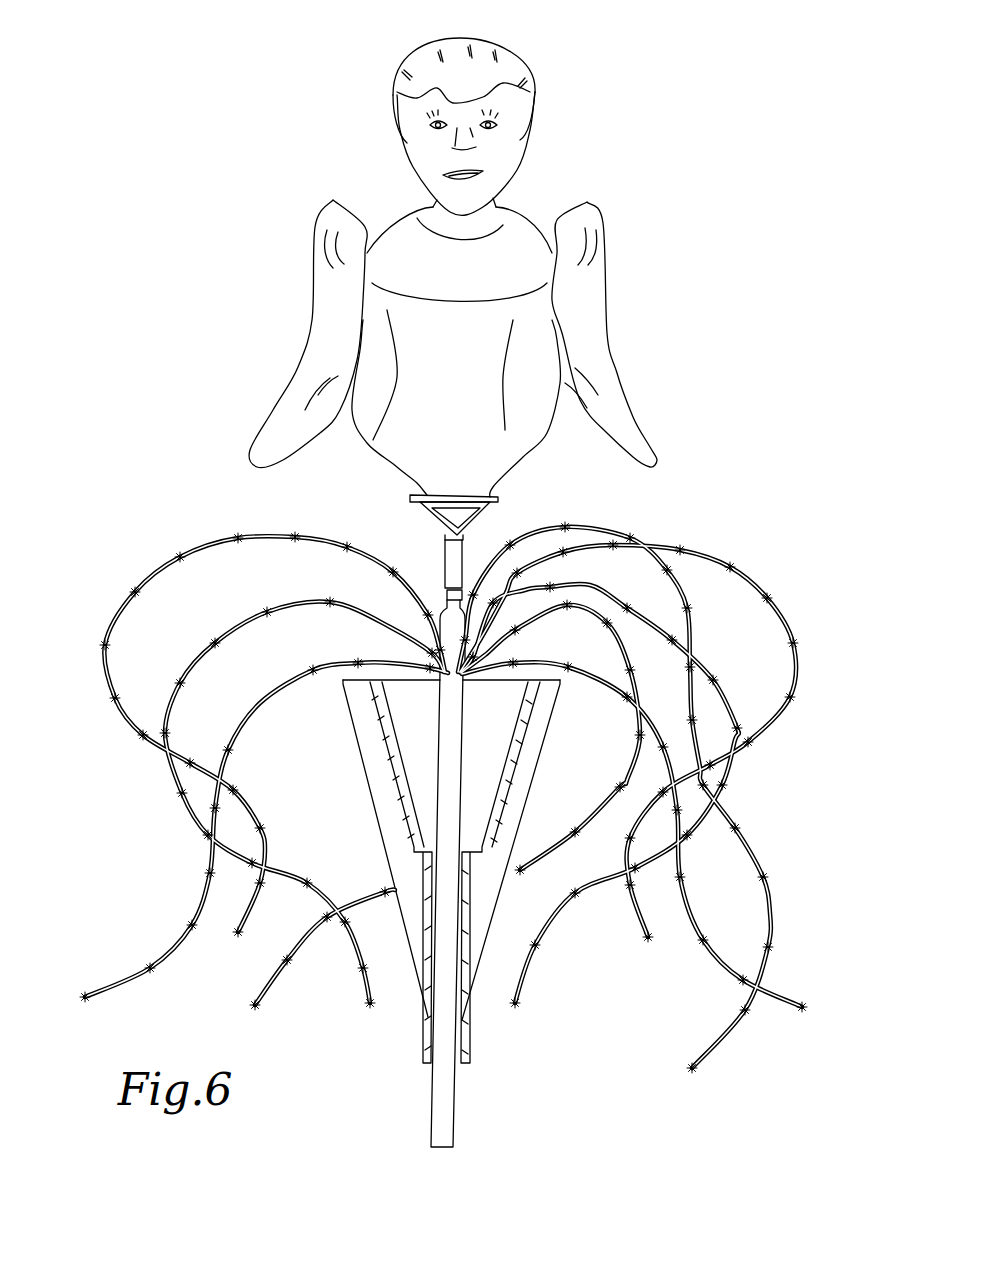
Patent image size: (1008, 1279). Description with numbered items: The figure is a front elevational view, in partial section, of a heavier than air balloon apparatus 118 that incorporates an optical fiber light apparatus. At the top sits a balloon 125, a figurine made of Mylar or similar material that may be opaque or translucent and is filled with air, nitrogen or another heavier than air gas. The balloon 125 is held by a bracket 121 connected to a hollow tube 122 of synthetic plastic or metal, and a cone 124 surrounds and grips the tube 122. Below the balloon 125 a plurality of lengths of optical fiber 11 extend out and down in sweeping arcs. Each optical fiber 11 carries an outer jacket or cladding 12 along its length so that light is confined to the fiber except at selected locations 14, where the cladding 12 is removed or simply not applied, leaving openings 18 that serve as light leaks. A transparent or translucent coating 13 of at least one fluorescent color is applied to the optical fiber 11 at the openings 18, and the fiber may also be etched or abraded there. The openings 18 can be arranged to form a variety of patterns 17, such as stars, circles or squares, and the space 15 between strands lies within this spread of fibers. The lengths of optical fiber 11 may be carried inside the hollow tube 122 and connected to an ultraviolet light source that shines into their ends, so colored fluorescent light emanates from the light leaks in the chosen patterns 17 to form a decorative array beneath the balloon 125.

The optical fiber 11 is at (193, 662).
The outer jacket or cladding 12 is at (470, 790).
The transparent or translucent coating 13 is at (105, 645).
The selected locations 14 is at (115, 698).
The space between strands 15 is at (429, 767).
The patterns 17 is at (470, 790).
The openings 18 is at (180, 557).
The balloon apparatus 118 is at (445, 592).
The bracket 121 is at (497, 497).
The hollow tube 122 is at (452, 1102).
The cone 124 is at (529, 758).
The balloon 125 is at (513, 233).